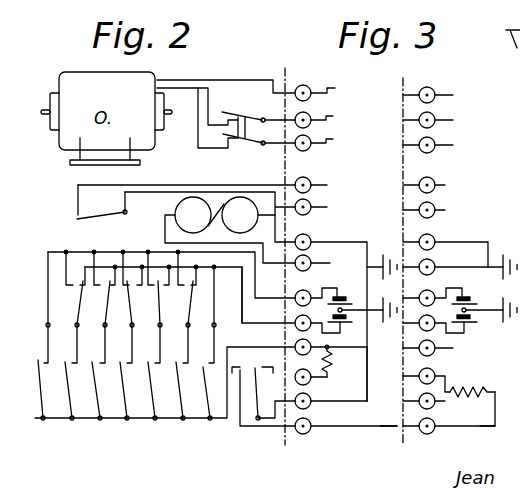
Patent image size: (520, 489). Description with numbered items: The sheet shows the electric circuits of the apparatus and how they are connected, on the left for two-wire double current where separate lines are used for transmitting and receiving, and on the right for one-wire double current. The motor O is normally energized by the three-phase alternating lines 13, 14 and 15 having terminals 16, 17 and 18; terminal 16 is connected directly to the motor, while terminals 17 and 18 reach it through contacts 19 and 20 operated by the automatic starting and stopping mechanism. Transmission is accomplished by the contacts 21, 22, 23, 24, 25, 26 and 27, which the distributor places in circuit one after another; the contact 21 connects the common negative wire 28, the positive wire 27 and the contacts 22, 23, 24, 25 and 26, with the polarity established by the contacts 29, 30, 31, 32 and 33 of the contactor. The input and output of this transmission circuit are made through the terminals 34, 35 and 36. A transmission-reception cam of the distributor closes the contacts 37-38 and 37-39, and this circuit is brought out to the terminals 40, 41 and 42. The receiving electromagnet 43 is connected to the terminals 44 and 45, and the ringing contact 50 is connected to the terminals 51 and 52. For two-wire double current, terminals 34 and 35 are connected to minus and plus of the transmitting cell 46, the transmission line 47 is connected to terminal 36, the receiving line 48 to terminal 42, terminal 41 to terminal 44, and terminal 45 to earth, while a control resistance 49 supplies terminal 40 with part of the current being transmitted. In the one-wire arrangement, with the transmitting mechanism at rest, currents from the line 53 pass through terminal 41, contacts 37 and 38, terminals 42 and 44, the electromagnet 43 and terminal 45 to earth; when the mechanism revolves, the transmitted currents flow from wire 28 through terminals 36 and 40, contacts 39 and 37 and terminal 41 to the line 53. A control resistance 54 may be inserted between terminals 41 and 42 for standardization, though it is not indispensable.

In FIG. 2, the three-phase alternating line 13 is at (335, 84).
In FIG. 2, the three-phase alternating line 14 is at (338, 112).
In FIG. 2, the three-phase alternating line 15 is at (337, 137).
In FIG. 2, the terminal 16 is at (305, 82).
In FIG. 3, the terminal 16 is at (434, 90).
In FIG. 2, the terminal 17 is at (312, 111).
In FIG. 3, the terminal 17 is at (435, 116).
In FIG. 2, the terminal 18 is at (313, 134).
In FIG. 3, the terminal 18 is at (435, 141).
In FIG. 2, the contact 19 is at (227, 114).
In FIG. 2, the contact 20 is at (229, 141).
In FIG. 2, the contact 21 is at (42, 421).
In FIG. 2, the contact 22 is at (71, 421).
In FIG. 2, the contact 23 is at (99, 421).
In FIG. 2, the contact 24 is at (126, 421).
In FIG. 2, the contact 25 is at (154, 421).
In FIG. 2, the contact 26 is at (182, 421).
In FIG. 2, the contact (positive wire) 27 is at (209, 421).
In FIG. 2, the common negative wire 28 is at (245, 349).
In FIG. 2, the contact of the contactor 29 is at (68, 304).
In FIG. 2, the contact of the contactor 30 is at (96, 304).
In FIG. 2, the contact of the contactor 31 is at (123, 304).
In FIG. 2, the contact of the contactor 32 is at (151, 304).
In FIG. 2, the contact of the contactor 33 is at (180, 304).
In FIG. 2, the terminal 34 is at (296, 296).
In FIG. 3, the terminal 34 is at (453, 302).
In FIG. 2, the terminal 35 is at (296, 321).
In FIG. 3, the terminal 35 is at (434, 321).
In FIG. 2, the terminal 36 is at (296, 345).
In FIG. 3, the terminal 36 is at (428, 345).
In FIG. 2, the contact 37 is at (257, 421).
In FIG. 2, the contact 38 is at (263, 387).
In FIG. 2, the contact 39 is at (272, 360).
In FIG. 2, the terminal 40 is at (313, 382).
In FIG. 3, the terminal 40 is at (428, 377).
In FIG. 2, the terminal 41 is at (313, 406).
In FIG. 3, the terminal 41 is at (437, 405).
In FIG. 2, the terminal 42 is at (313, 431).
In FIG. 3, the terminal 42 is at (436, 430).
In FIG. 2, the receiving electromagnet 43 is at (177, 207).
In FIG. 2, the terminal 44 is at (311, 240).
In FIG. 3, the terminal 44 is at (435, 238).
In FIG. 2, the terminal 45 is at (311, 259).
In FIG. 3, the terminal 45 is at (435, 263).
In FIG. 2, the transmitting cell 46 is at (341, 293).
In FIG. 2, the transmission line 47 is at (372, 351).
In FIG. 2, the receiving line 48 is at (380, 429).
In FIG. 2, the control resistance 49 is at (340, 363).
In FIG. 2, the ringing contact 50 is at (95, 216).
In FIG. 2, the terminal 51 is at (311, 182).
In FIG. 3, the terminal 51 is at (435, 181).
In FIG. 2, the terminal 52 is at (311, 205).
In FIG. 3, the terminal 52 is at (435, 206).
In FIG. 3, the line 53 is at (496, 429).
In FIG. 3, the control resistance 54 is at (466, 388).